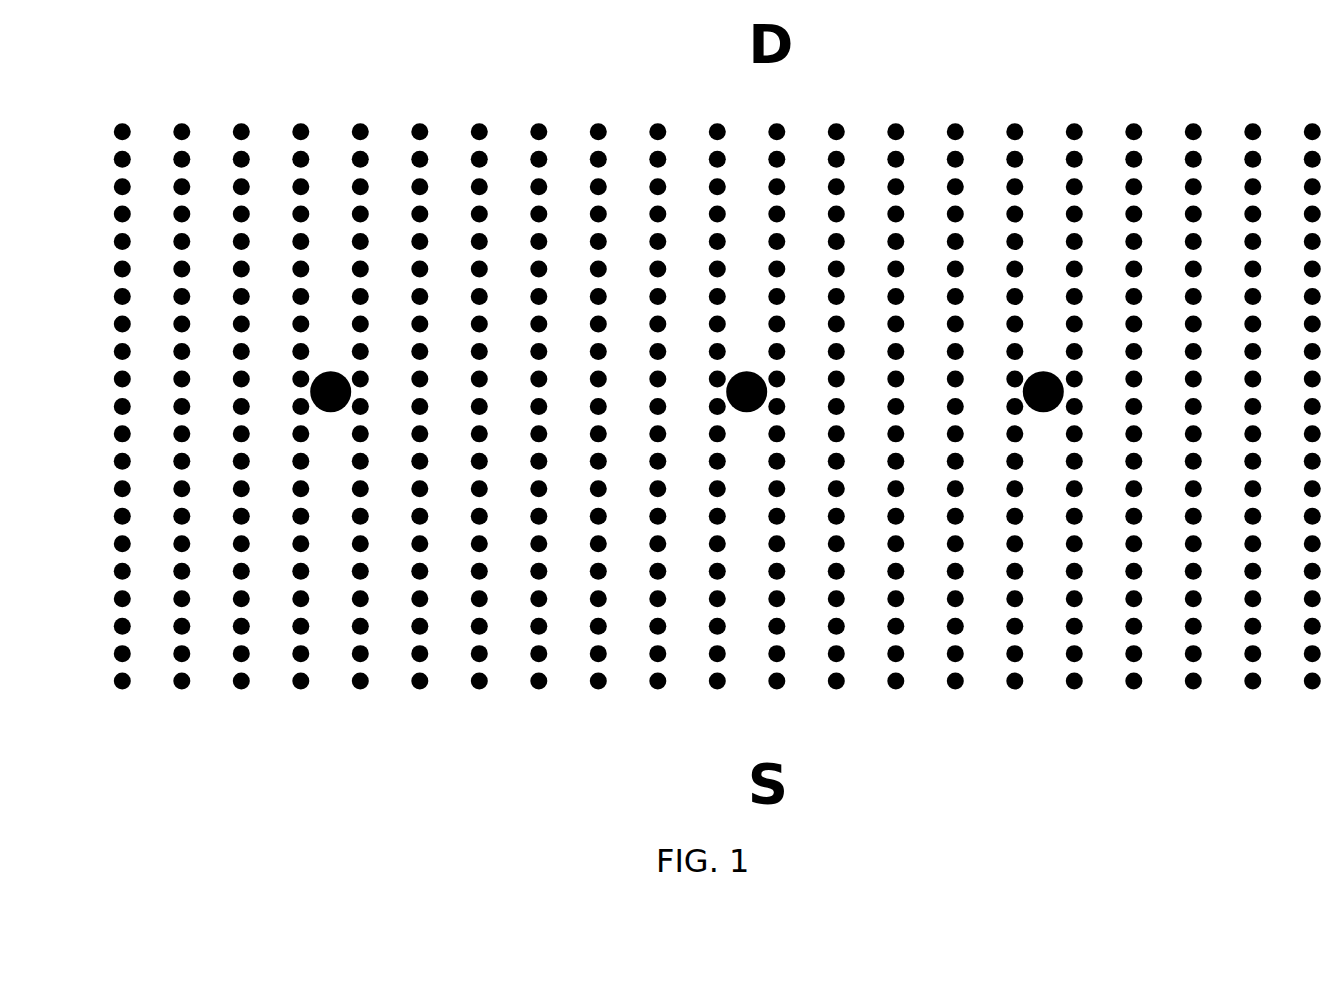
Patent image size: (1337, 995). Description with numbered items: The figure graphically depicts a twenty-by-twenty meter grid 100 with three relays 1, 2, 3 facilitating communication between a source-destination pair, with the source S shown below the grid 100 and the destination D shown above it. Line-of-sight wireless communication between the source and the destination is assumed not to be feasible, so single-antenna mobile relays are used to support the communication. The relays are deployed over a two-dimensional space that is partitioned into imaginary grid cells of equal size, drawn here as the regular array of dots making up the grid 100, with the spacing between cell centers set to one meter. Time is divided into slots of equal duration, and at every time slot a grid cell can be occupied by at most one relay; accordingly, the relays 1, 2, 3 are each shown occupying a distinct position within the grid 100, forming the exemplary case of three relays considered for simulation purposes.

The grid 100 is at (1254, 728).
The relay 1 is at (330, 391).
The relay 2 is at (746, 391).
The relay 3 is at (1043, 391).